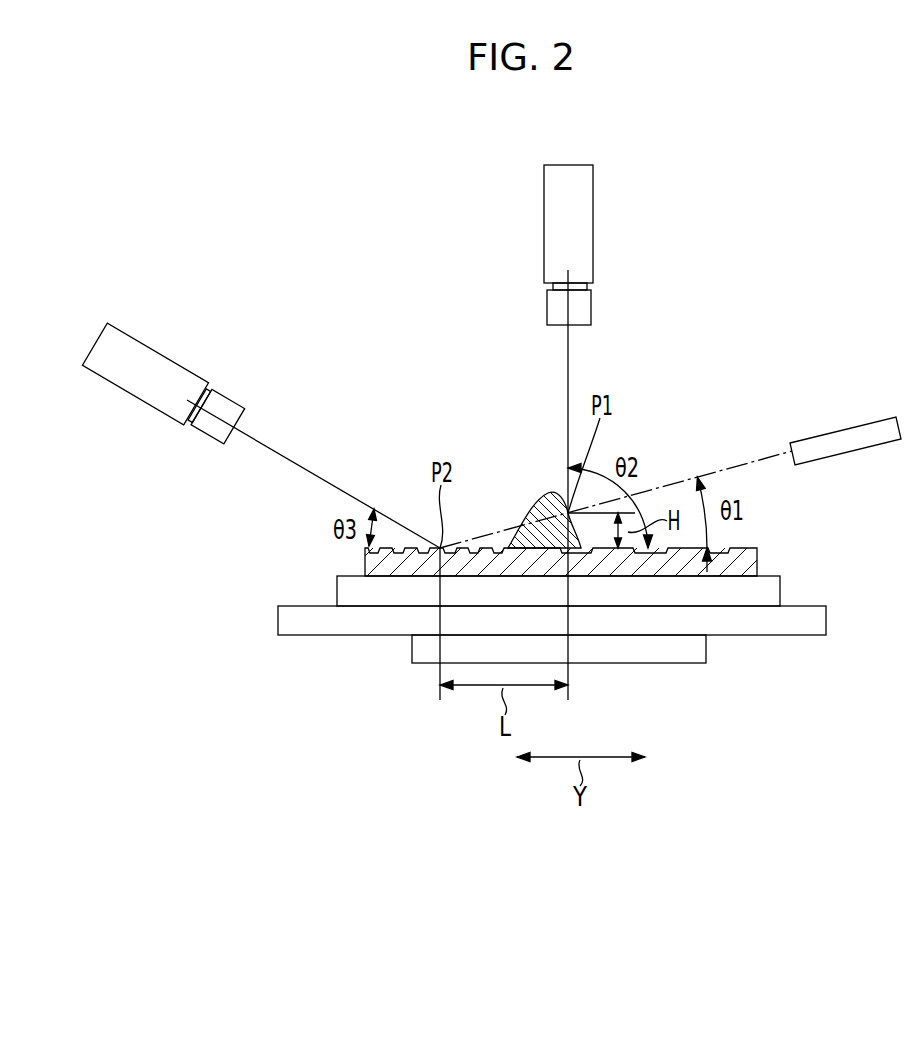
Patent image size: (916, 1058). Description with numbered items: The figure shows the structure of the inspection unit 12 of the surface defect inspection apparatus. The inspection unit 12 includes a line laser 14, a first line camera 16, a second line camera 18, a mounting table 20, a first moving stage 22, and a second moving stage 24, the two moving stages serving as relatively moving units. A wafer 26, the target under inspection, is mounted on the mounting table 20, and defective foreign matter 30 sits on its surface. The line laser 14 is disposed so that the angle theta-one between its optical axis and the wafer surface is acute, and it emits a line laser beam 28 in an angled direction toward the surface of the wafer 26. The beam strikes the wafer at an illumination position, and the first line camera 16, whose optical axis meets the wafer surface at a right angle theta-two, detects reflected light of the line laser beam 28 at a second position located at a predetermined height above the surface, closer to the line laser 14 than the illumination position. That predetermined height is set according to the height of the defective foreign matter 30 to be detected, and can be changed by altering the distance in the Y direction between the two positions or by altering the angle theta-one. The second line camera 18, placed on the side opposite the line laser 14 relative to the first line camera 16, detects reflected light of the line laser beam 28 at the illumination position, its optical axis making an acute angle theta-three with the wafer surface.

The inspection unit 12 is at (607, 393).
The line laser 14 is at (843, 429).
The first line camera 16 is at (593, 225).
The second line camera 18 is at (168, 358).
The mounting table 20 is at (780, 587).
The first moving stage 22 is at (826, 618).
The second moving stage 24 is at (706, 654).
The wafer 26 is at (757, 553).
The line laser beam 28 is at (762, 455).
The defective foreign matter 30 is at (527, 512).